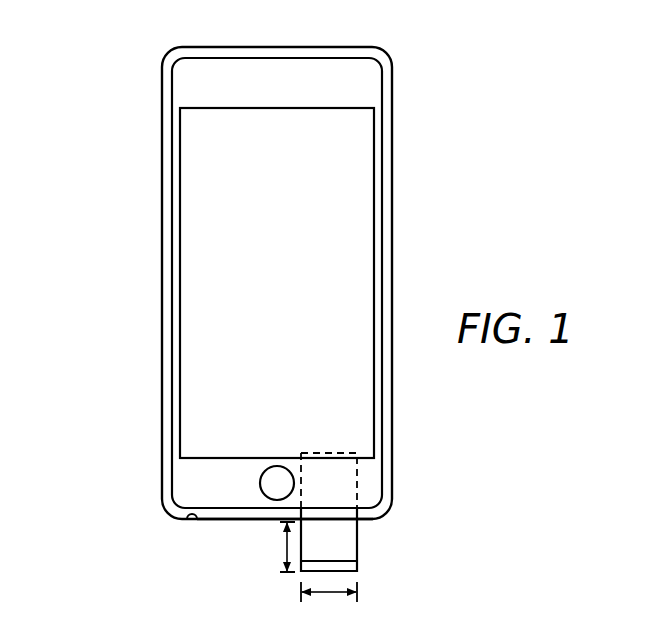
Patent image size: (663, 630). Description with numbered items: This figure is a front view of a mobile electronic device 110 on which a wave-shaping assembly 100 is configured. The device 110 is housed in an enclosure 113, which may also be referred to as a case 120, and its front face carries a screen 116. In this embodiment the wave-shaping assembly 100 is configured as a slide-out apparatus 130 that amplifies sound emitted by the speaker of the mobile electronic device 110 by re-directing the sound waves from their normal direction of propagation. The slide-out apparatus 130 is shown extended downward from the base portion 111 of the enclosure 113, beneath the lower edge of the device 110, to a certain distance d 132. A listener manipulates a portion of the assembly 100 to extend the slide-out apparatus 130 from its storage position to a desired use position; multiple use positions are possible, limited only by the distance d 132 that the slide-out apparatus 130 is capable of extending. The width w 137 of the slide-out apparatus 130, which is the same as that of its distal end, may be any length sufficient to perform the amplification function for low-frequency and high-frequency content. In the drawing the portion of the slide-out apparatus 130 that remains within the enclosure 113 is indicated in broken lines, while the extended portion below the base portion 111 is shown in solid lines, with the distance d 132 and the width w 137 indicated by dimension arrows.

The wave-shaping assembly 100 is at (373, 546).
The mobile electronic device 110 is at (162, 250).
The base portion 111 is at (210, 518).
The enclosure 113 is at (192, 482).
The screen 116 is at (352, 175).
The case 120 is at (343, 48).
The slide-out apparatus 130 is at (331, 548).
The distance d 132 is at (285, 543).
The width w 137 is at (328, 594).